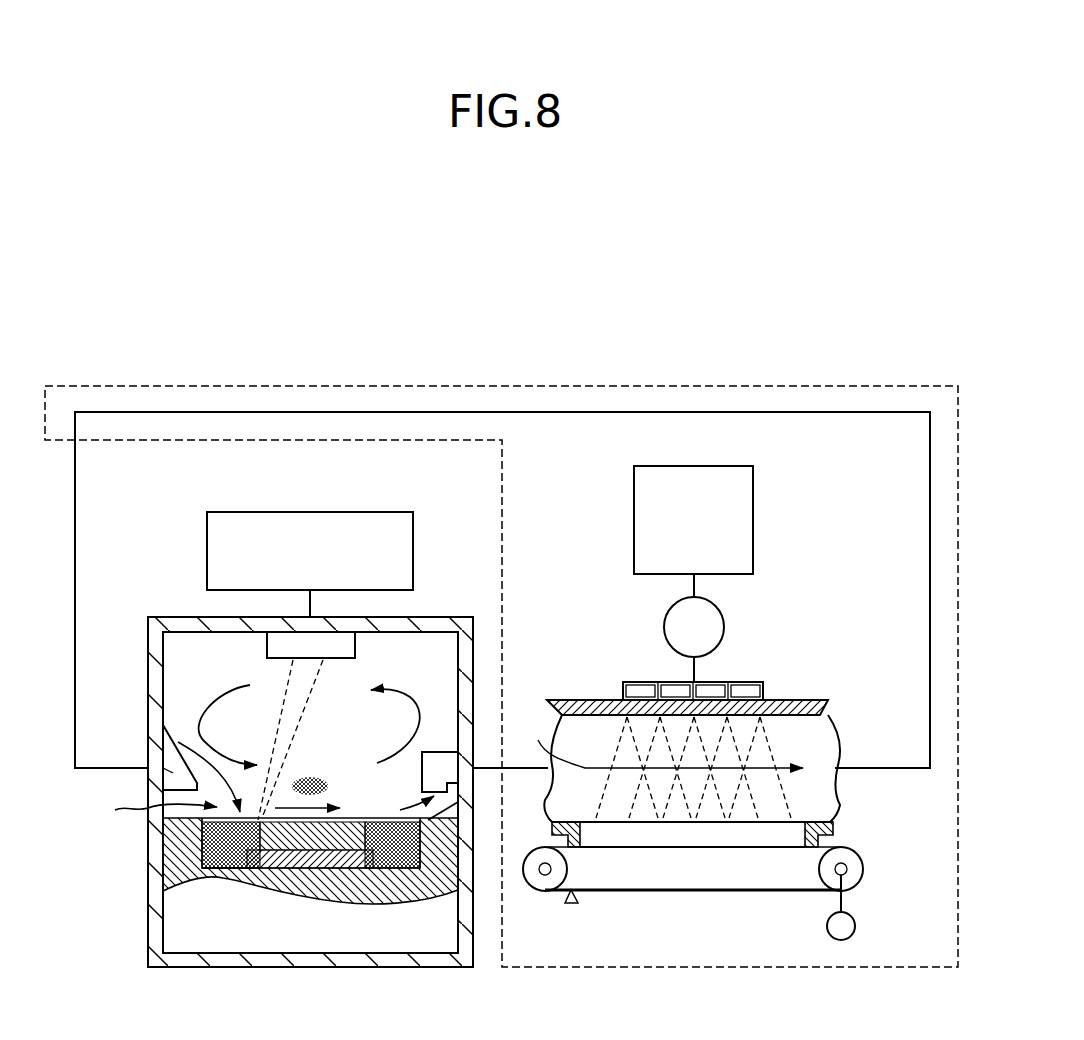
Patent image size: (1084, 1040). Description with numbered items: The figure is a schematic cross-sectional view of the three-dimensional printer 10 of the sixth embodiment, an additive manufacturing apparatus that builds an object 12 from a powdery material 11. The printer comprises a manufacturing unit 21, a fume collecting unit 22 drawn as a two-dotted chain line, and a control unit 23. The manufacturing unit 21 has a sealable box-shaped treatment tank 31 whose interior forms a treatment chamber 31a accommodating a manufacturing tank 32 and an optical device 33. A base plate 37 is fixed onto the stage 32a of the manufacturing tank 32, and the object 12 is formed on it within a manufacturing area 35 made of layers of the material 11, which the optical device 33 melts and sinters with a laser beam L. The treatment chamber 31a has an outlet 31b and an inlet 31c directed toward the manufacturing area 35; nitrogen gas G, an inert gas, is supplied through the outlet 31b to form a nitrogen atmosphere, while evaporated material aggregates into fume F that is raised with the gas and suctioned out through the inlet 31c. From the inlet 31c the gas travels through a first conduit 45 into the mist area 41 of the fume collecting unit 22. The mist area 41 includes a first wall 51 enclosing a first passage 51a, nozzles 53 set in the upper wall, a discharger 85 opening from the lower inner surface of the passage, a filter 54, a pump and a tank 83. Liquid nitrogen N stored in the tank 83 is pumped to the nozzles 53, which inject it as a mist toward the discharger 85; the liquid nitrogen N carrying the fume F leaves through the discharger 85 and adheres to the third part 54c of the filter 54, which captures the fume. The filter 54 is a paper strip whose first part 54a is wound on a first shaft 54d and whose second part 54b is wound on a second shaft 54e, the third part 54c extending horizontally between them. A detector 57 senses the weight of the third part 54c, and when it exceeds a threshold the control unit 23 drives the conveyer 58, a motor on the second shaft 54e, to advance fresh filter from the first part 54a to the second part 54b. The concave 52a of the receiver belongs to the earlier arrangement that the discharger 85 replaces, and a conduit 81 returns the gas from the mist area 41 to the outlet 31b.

The three-dimensional printer 10 is at (103, 214).
The fume collecting unit 22 is at (838, 386).
The conduit 81 is at (703, 412).
The control unit 23 is at (207, 542).
The treatment tank 31 is at (162, 618).
The treatment chamber 31a is at (186, 634).
The manufacturing unit 21 is at (146, 962).
The optical device 33 is at (355, 645).
The laser beam L is at (285, 690).
The manufacturing area 35 is at (163, 725).
The outlet 31b is at (172, 773).
The nitrogen gas G is at (421, 684).
The fume F is at (313, 768).
The manufacturing tank 32 is at (175, 862).
The material 11 is at (396, 852).
The object 12 is at (333, 840).
The base plate 37 is at (291, 868).
The stage 32a is at (225, 870).
The inlet 31c is at (444, 762).
The tank 83 is at (753, 516).
The concave 52a is at (724, 627).
The nozzles 53 is at (643, 690).
The first wall 51 is at (590, 700).
The mist area 41 is at (565, 698).
The first passage 51a is at (812, 718).
The liquid nitrogen N is at (772, 752).
The first conduit 45 is at (522, 770).
The discharger 85 is at (584, 833).
The filter 54 is at (866, 870).
The first part 54a is at (538, 885).
The first shaft 54d is at (547, 878).
The second part 54b is at (853, 883).
The second shaft 54e is at (850, 882).
The third part 54c is at (765, 892).
The conveyer 58 is at (835, 935).
The detector 57 is at (572, 905).